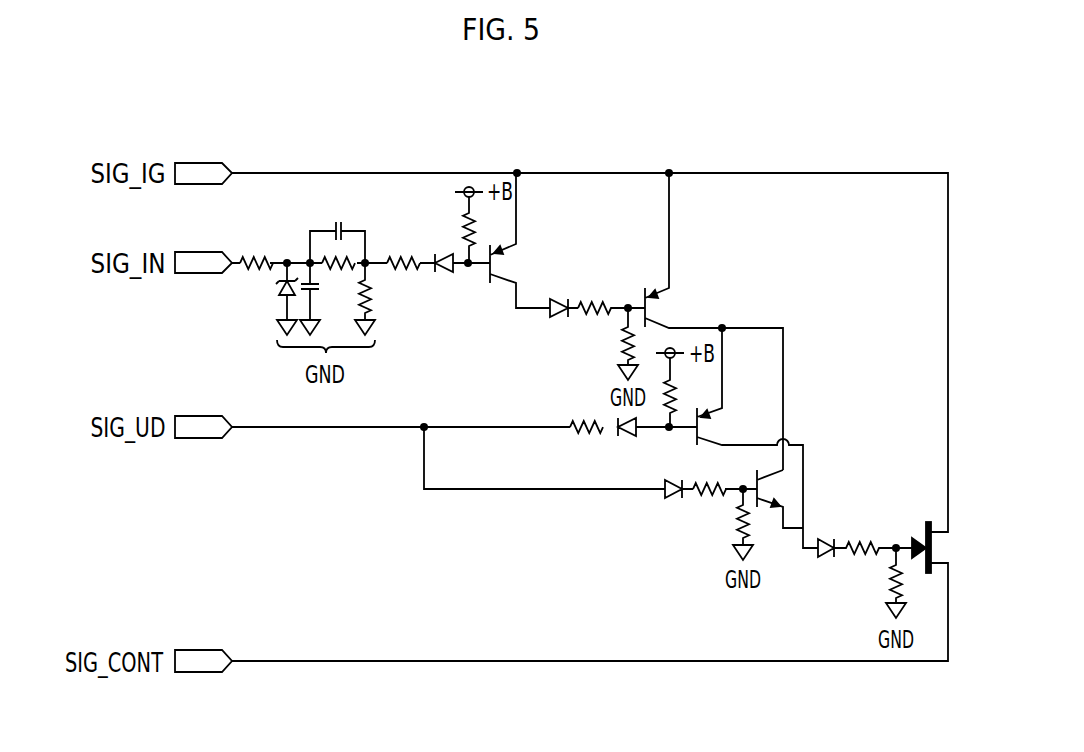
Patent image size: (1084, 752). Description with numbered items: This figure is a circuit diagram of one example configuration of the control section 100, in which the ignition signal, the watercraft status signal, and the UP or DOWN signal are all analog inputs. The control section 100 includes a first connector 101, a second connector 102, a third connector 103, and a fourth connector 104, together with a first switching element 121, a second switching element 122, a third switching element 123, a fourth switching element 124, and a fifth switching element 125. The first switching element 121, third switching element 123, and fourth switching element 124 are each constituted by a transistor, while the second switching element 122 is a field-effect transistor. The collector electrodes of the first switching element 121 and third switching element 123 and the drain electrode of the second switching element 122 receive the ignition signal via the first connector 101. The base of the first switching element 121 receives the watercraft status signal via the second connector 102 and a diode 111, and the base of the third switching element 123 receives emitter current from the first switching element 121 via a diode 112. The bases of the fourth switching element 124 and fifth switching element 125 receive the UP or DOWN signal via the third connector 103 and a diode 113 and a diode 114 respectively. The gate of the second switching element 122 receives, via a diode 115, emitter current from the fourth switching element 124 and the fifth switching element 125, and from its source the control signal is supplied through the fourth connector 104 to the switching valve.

The control section 100 is at (113, 100).
The first connector 101 is at (198, 162).
The second connector 102 is at (198, 251).
The third connector 103 is at (198, 415).
The fourth connector 104 is at (198, 649).
The diode 111 is at (450, 273).
The diode 112 is at (557, 320).
The diode 113 is at (625, 438).
The diode 114 is at (668, 500).
The diode 115 is at (823, 560).
The first switching element 121 is at (529, 266).
The second switching element 122 is at (924, 504).
The third switching element 123 is at (681, 307).
The fourth switching element 124 is at (735, 427).
The fifth switching element 125 is at (791, 494).